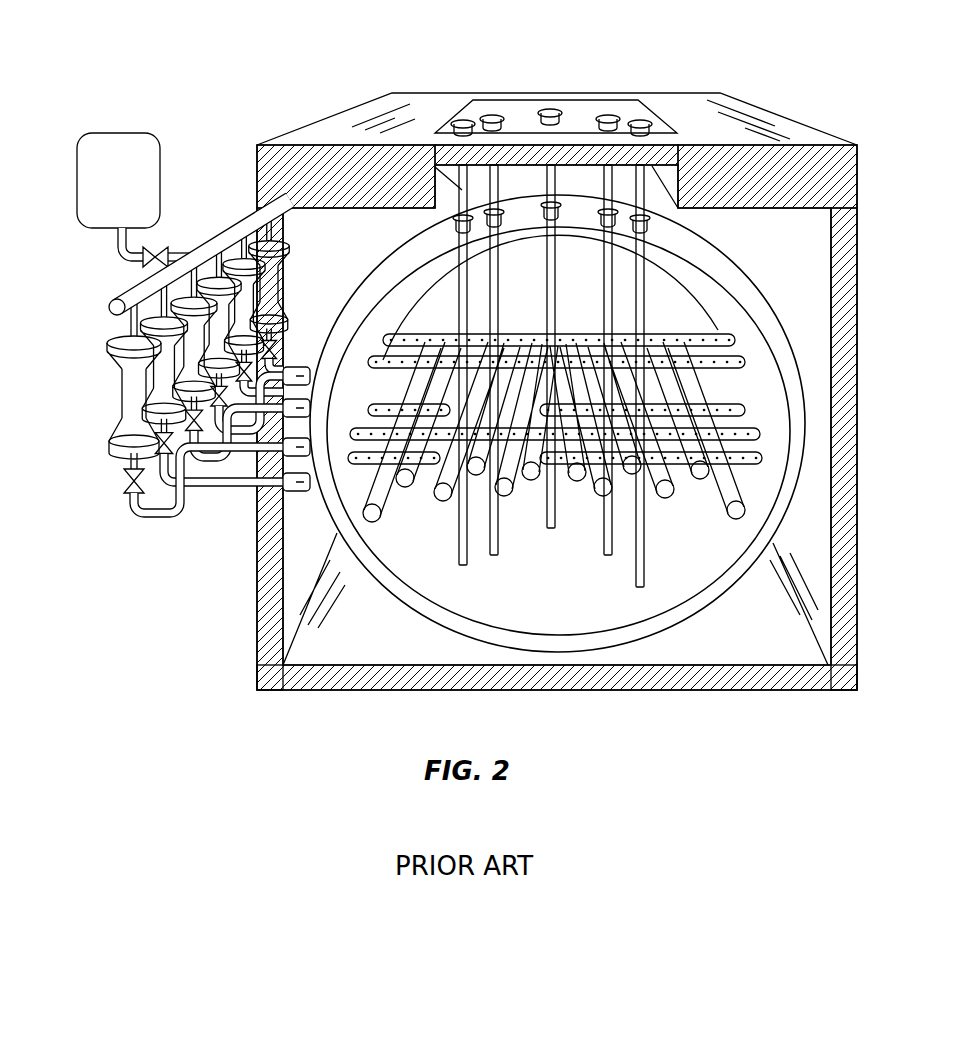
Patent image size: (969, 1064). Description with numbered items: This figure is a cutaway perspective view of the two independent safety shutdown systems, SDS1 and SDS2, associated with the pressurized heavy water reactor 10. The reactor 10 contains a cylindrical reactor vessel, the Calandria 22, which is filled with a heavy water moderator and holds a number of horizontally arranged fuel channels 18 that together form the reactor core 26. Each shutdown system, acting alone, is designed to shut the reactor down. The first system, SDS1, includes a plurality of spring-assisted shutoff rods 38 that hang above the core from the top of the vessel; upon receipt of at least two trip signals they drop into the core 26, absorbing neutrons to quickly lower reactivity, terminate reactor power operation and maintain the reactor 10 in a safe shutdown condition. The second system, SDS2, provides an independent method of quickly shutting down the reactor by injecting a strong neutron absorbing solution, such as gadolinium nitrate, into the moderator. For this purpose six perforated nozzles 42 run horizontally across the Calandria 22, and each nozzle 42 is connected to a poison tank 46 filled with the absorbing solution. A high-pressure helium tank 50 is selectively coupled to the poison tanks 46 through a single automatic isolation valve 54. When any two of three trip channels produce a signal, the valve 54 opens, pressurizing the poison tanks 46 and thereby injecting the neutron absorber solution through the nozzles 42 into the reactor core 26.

The pressurized heavy water reactor 10 is at (770, 70).
The fuel channels 18 is at (584, 472).
The Calandria 22 is at (752, 328).
The reactor core 26 is at (538, 316).
The spring-assisted shutoff rods 38 is at (608, 114).
The perforated nozzles 42 is at (437, 338).
The poison tank 46 is at (118, 400).
The high-pressure helium tank 50 is at (125, 155).
The automatic isolation valve 54 is at (150, 255).
The first safety shutdown system SDS1 is at (527, 86).
The second safety shutdown system SDS2 is at (174, 356).